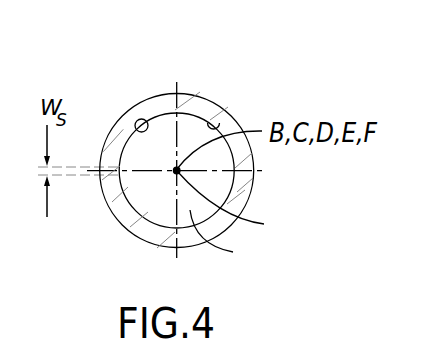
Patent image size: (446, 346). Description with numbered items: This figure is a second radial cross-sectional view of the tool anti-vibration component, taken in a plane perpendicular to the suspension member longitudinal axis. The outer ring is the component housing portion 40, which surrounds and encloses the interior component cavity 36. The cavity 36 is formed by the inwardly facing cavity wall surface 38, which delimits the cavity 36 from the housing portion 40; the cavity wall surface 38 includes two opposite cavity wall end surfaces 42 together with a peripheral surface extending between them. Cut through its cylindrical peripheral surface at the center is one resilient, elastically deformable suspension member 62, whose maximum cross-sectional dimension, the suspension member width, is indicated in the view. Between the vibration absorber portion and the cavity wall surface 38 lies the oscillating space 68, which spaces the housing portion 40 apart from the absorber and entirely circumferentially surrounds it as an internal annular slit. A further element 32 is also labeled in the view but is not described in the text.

The component housing portion 40 is at (166, 98).
The nozzle wall 32 is at (151, 97).
The cavity wall end surfaces 42 is at (137, 121).
The interior component cavity 36 is at (190, 128).
The cavity wall surface 38 is at (221, 124).
The suspension member 62 is at (234, 203).
The oscillating space 68 is at (229, 239).